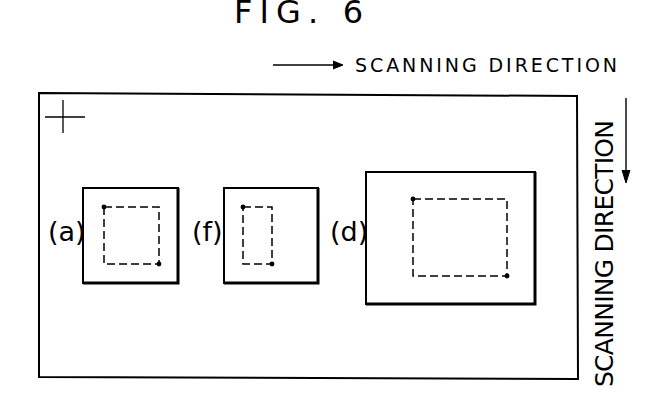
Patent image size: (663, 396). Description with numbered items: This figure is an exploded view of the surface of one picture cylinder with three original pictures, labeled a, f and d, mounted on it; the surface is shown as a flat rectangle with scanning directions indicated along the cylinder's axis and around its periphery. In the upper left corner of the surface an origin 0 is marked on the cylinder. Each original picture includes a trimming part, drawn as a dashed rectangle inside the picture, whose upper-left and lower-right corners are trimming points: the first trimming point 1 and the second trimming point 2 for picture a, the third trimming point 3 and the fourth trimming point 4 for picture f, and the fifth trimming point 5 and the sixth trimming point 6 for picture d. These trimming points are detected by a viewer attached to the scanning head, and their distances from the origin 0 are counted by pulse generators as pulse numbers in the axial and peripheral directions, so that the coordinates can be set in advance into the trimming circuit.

The origin 0 is at (67, 111).
The trimming point P1 1 is at (104, 207).
The trimming point P2 2 is at (159, 264).
The trimming point P3 3 is at (243, 207).
The trimming point P4 4 is at (272, 264).
The trimming point P5 5 is at (413, 199).
The trimming point P6 6 is at (507, 276).